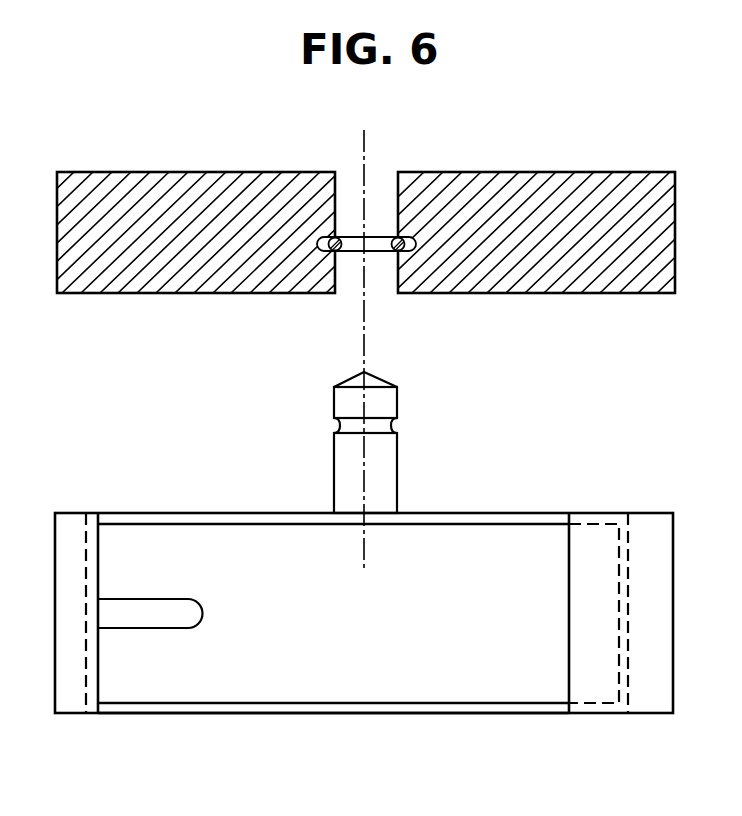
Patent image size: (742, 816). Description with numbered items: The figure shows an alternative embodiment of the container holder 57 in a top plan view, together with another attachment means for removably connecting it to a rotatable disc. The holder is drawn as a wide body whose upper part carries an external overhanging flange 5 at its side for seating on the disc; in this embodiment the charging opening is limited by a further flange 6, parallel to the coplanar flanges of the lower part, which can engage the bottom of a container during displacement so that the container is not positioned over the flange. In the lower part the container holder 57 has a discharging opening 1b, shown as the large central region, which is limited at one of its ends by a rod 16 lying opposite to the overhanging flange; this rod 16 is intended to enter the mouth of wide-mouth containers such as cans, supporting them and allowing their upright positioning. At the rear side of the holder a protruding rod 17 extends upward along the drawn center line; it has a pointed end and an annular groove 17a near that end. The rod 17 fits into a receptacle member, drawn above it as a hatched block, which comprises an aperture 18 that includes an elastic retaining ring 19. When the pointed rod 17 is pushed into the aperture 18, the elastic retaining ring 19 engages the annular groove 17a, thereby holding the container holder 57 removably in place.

The overhanging flange 5 is at (667, 592).
The further flange 6 is at (569, 642).
The discharging opening 1b is at (357, 632).
The rod 16 is at (147, 607).
The protruding rod 17 is at (387, 470).
The annular groove 17a is at (384, 427).
The aperture 18 is at (345, 296).
The elastic retaining ring 19 is at (340, 243).
The container holder 57 is at (362, 715).